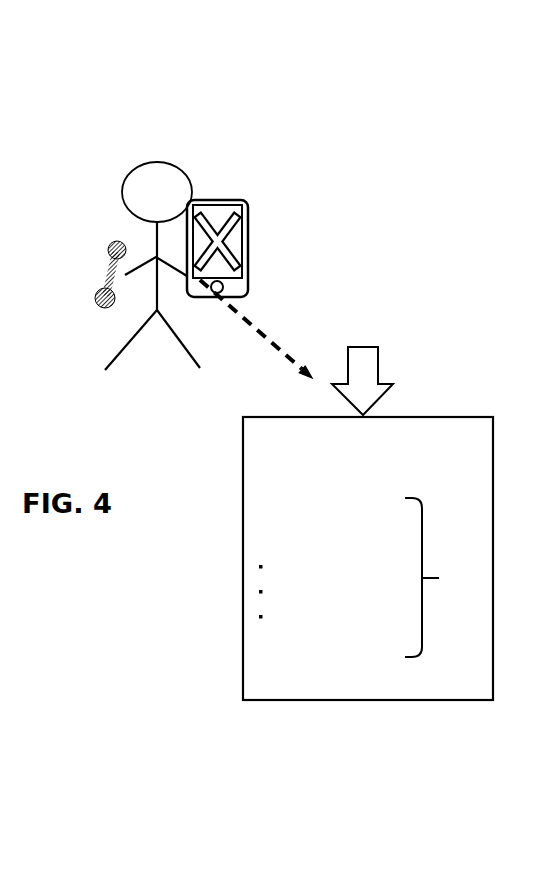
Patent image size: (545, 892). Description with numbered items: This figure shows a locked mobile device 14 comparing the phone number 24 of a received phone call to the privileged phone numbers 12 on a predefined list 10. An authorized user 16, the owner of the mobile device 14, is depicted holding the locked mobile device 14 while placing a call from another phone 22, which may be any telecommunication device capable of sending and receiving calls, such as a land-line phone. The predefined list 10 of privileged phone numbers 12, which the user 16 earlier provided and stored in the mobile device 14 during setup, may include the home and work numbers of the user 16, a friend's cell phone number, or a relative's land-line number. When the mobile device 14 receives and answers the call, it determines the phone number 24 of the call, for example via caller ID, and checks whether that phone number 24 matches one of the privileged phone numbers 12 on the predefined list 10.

The predefined list 10 is at (227, 555).
The privileged phone numbers 12 is at (361, 577).
The mobile device 14 is at (248, 237).
The authorized user 16 is at (112, 136).
The phone 22 is at (108, 248).
The phone number 24 is at (397, 302).